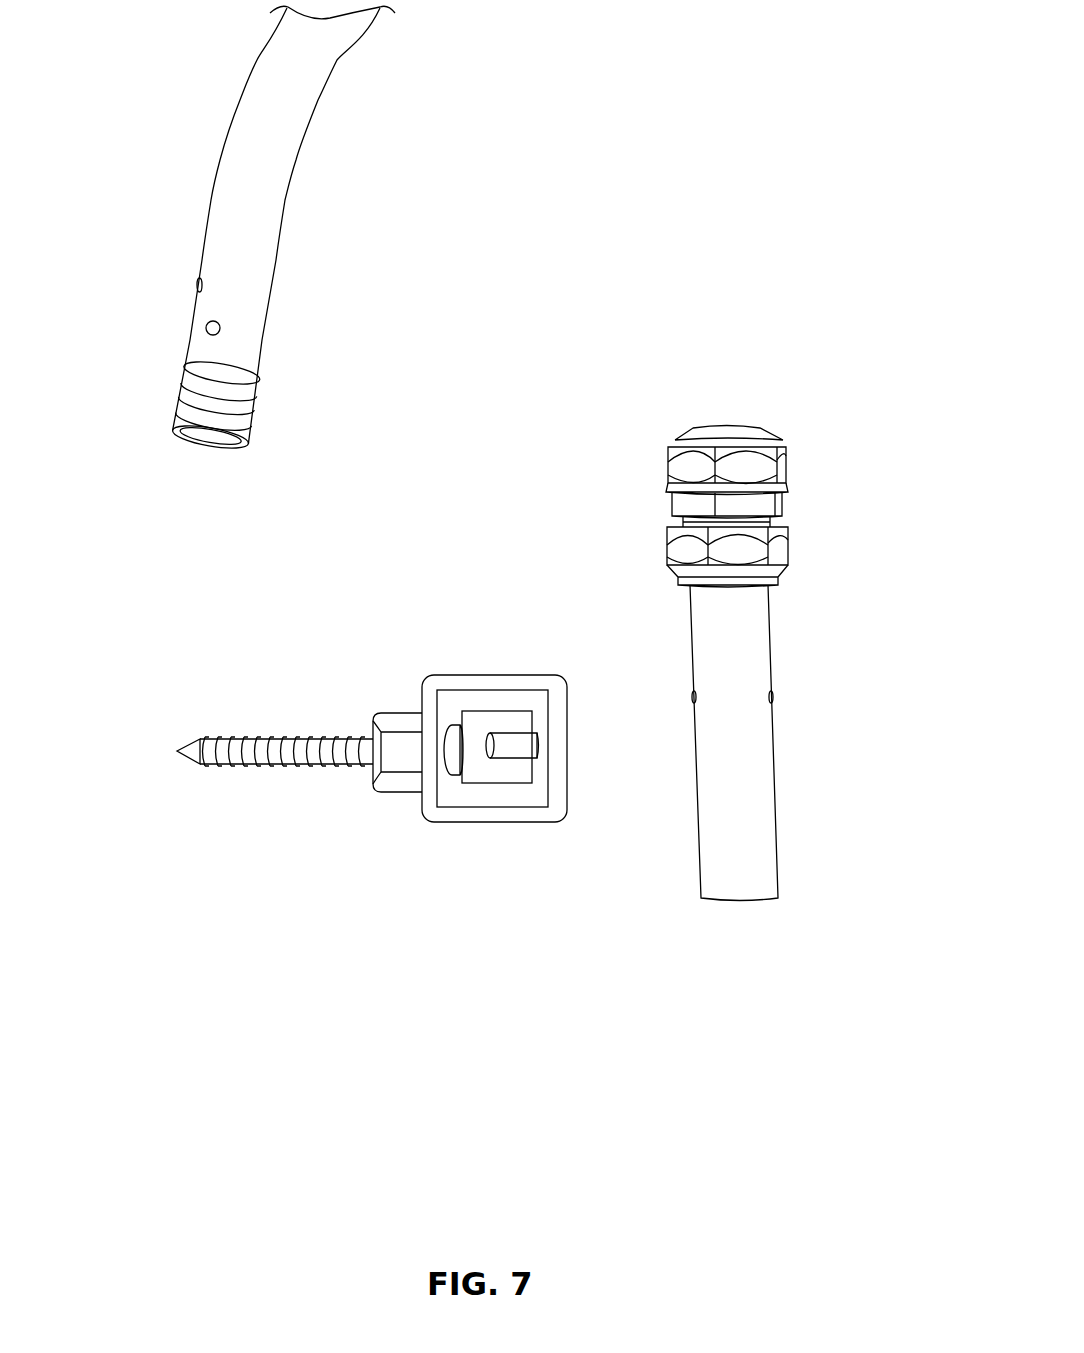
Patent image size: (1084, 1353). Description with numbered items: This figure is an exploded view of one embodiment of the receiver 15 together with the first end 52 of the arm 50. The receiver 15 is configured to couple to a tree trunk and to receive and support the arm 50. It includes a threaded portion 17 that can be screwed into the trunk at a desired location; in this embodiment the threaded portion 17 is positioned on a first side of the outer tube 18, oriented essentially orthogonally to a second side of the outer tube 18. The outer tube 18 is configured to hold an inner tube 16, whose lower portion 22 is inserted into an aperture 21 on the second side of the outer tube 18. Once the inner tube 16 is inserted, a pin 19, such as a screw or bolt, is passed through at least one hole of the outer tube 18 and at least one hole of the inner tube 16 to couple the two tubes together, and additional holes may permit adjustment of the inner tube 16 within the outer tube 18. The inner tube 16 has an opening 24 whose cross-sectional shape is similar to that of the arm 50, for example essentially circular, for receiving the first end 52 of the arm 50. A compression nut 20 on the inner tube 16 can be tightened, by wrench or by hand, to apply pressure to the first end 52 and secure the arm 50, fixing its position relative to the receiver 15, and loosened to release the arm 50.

The receiver 15 is at (539, 720).
The inner tube 16 is at (775, 638).
The threaded portion 17 is at (285, 725).
The outer tube 18 is at (525, 735).
The pin 19 is at (538, 746).
The compression nut 20 is at (802, 460).
The aperture 21 is at (482, 779).
The lower portion 22 is at (785, 865).
The opening 24 is at (723, 400).
The arm 50 is at (247, 229).
The first end 52 is at (168, 396).